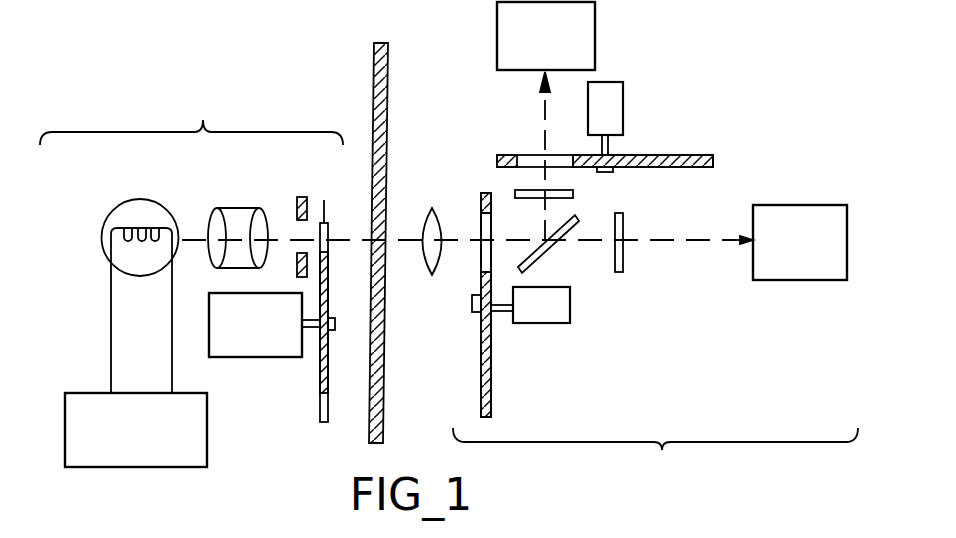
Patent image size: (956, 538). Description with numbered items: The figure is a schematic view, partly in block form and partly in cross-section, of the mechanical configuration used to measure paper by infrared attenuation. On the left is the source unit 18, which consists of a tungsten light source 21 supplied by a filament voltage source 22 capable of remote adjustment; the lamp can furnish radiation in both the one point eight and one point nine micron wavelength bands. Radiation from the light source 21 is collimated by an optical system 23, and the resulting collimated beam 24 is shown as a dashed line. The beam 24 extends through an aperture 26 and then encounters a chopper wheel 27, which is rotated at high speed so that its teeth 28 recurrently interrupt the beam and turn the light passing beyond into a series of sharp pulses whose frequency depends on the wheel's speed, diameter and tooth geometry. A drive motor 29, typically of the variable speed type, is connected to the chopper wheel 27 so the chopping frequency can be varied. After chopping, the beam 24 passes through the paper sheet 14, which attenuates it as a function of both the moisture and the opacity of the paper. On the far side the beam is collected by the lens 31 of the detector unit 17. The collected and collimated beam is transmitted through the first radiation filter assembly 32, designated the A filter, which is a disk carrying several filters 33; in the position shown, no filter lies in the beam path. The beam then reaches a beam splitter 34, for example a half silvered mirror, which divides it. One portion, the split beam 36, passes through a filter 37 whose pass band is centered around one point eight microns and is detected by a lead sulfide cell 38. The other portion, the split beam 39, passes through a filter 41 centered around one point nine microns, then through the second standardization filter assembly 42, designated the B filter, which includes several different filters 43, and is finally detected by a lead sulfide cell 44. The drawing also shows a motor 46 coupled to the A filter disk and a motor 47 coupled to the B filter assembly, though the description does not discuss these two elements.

The paper sheet 14 is at (389, 100).
The detector unit 17 is at (655, 450).
The source unit 18 is at (191, 116).
The tungsten light source 21 is at (127, 202).
The filament voltage source 22 is at (95, 393).
The optical system 23 is at (235, 210).
The collimated beam 24 is at (352, 240).
The aperture 26 is at (296, 222).
The chopper wheel 27 is at (319, 400).
The teeth 28 is at (327, 199).
The drive motor 29 is at (261, 359).
The lens 31 is at (433, 277).
The first radiation filter assembly 32 is at (505, 309).
The filters 33 is at (480, 362).
The beam splitter 34 is at (541, 257).
The split beam portion 36 is at (597, 240).
The filter 37 is at (624, 270).
The lead sulfide cell 38 is at (808, 283).
The split beam portion 39 is at (545, 213).
The filter 41 is at (520, 190).
The second standardization filter assembly 42 is at (708, 156).
The filters 43 is at (669, 155).
The lead sulfide cell 44 is at (494, 28).
The filter motor 46 is at (546, 325).
The filter plate motor 47 is at (623, 100).